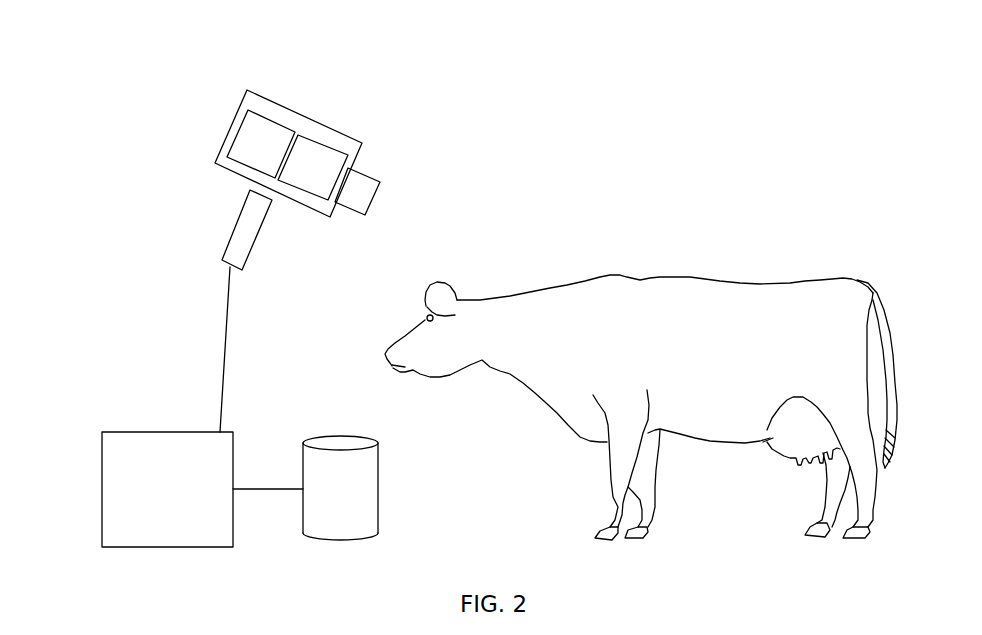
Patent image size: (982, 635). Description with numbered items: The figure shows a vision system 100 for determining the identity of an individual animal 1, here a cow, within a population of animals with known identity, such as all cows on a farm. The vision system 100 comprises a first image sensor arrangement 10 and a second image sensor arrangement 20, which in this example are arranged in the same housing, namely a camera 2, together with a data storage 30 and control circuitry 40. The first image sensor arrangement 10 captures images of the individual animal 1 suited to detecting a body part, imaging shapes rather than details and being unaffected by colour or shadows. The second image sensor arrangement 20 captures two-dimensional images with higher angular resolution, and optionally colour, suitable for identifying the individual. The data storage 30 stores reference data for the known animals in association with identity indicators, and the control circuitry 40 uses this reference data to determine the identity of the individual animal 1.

The individual animal 1 is at (690, 277).
The camera 2 is at (320, 132).
The first image sensor arrangement 10 is at (245, 163).
The second image sensor arrangement 20 is at (312, 197).
The data storage 30 is at (378, 488).
The control circuitry 40 is at (102, 468).
The vision system 100 is at (199, 90).